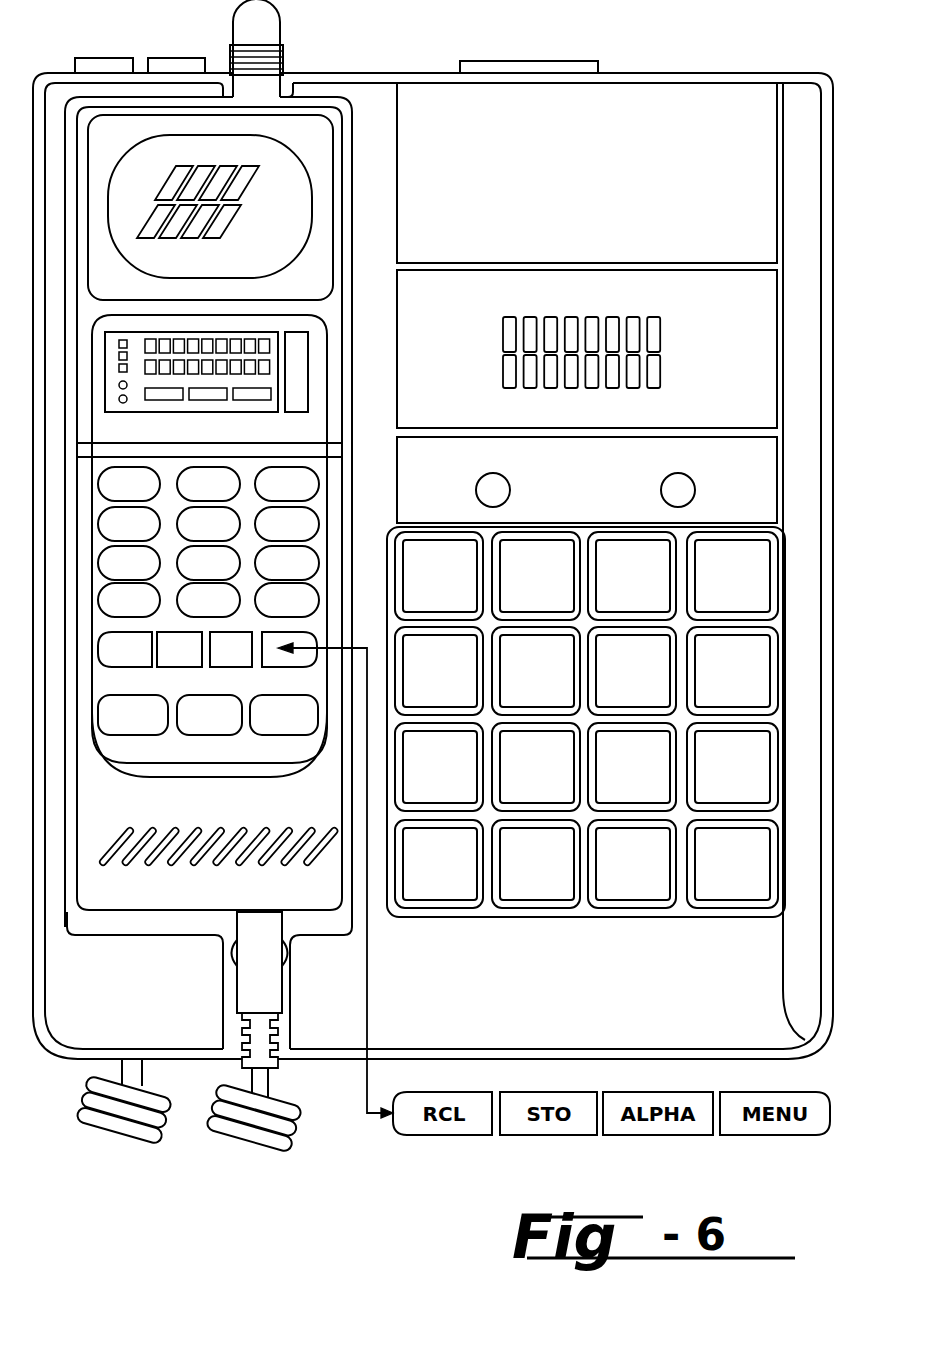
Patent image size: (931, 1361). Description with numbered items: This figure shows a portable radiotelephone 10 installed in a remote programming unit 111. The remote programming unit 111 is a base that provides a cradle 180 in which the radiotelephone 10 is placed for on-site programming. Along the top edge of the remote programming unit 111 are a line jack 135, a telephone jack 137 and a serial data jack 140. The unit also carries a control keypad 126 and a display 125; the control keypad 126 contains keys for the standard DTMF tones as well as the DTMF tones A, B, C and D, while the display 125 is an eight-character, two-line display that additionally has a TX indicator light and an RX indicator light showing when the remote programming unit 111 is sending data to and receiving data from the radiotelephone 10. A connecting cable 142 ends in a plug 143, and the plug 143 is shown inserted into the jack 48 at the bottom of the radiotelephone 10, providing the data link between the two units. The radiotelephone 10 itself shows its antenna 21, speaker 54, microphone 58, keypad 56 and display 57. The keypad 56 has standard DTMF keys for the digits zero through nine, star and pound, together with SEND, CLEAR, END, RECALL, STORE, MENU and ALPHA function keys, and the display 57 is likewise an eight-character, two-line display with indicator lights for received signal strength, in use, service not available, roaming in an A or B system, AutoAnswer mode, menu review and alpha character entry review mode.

The portable radiotelephone 10 is at (183, 903).
The antenna 21 is at (283, 32).
The jack 48 is at (283, 917).
The speaker 54 is at (172, 180).
The keypad 56 is at (168, 763).
The display 57 is at (330, 353).
The microphone 58 is at (297, 827).
The remote programming unit 111 is at (648, 72).
The display 125 is at (480, 263).
The control keypad 126 is at (535, 917).
The line jack 135 is at (122, 58).
The telephone jack 137 is at (161, 40).
The RS-232 jack 140 is at (520, 58).
The connecting cable 142 is at (282, 1100).
The plug 143 is at (233, 1000).
The cradle 180 is at (135, 938).